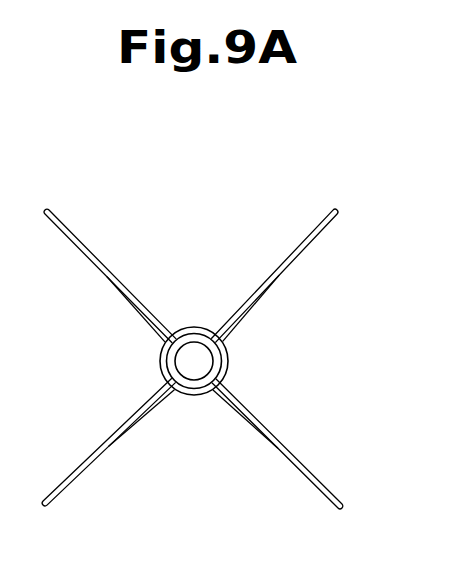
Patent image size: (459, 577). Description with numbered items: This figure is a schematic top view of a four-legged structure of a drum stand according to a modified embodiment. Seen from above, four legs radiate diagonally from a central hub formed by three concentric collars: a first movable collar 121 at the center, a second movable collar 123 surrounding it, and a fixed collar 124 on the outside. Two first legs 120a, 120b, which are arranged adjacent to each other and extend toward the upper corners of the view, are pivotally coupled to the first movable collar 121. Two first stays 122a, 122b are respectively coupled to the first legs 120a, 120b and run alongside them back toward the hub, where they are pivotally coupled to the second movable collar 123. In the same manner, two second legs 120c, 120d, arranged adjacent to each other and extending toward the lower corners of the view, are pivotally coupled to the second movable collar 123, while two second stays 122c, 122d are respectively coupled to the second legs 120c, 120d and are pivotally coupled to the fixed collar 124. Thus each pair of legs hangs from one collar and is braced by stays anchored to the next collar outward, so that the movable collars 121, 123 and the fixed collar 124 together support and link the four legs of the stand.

The first leg 120a is at (48, 210).
The first leg 120b is at (337, 210).
The second leg 120c is at (45, 506).
The second leg 120d is at (341, 509).
The first stay 122a is at (106, 277).
The first stay 122b is at (281, 276).
The second stay 122c is at (109, 448).
The second stay 122d is at (277, 448).
The first movable collar 121 is at (194, 342).
The second movable collar 123 is at (226, 361).
The fixed collar 124 is at (194, 395).